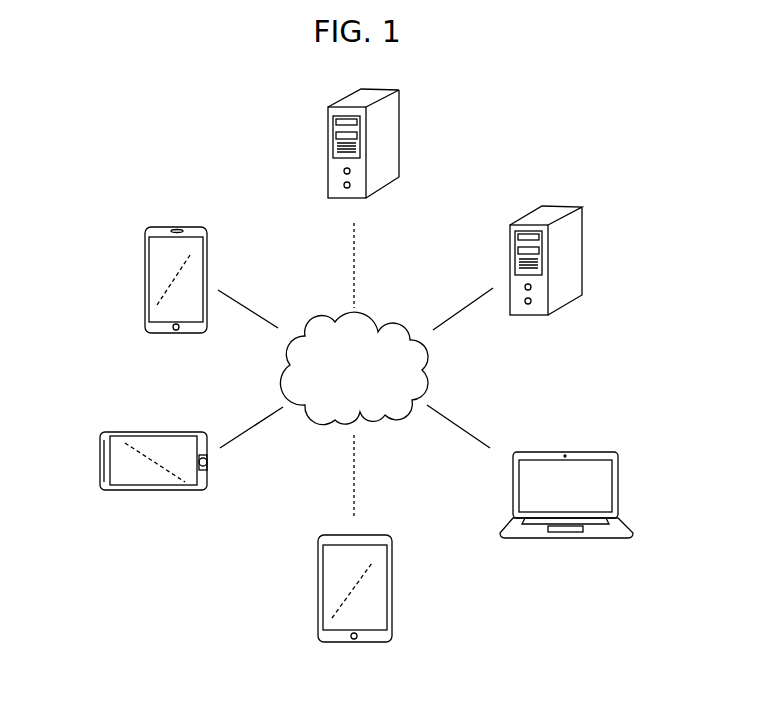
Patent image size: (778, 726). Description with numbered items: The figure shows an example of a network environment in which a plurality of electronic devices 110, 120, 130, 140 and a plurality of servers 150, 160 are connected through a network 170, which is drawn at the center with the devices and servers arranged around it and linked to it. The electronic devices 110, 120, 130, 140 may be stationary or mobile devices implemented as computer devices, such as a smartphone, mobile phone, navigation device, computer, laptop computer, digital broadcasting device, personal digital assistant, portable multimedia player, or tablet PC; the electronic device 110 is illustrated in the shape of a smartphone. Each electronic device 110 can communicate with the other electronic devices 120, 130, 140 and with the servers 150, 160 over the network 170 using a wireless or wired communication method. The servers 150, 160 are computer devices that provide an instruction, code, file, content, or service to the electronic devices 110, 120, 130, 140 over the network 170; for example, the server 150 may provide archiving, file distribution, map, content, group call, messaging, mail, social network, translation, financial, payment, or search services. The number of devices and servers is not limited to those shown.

The electronic device 110 is at (145, 280).
The electronic device 120 is at (100, 455).
The electronic device 130 is at (392, 590).
The electronic device 140 is at (618, 485).
The server 150 is at (548, 245).
The server 160 is at (366, 132).
The network 170 is at (378, 333).